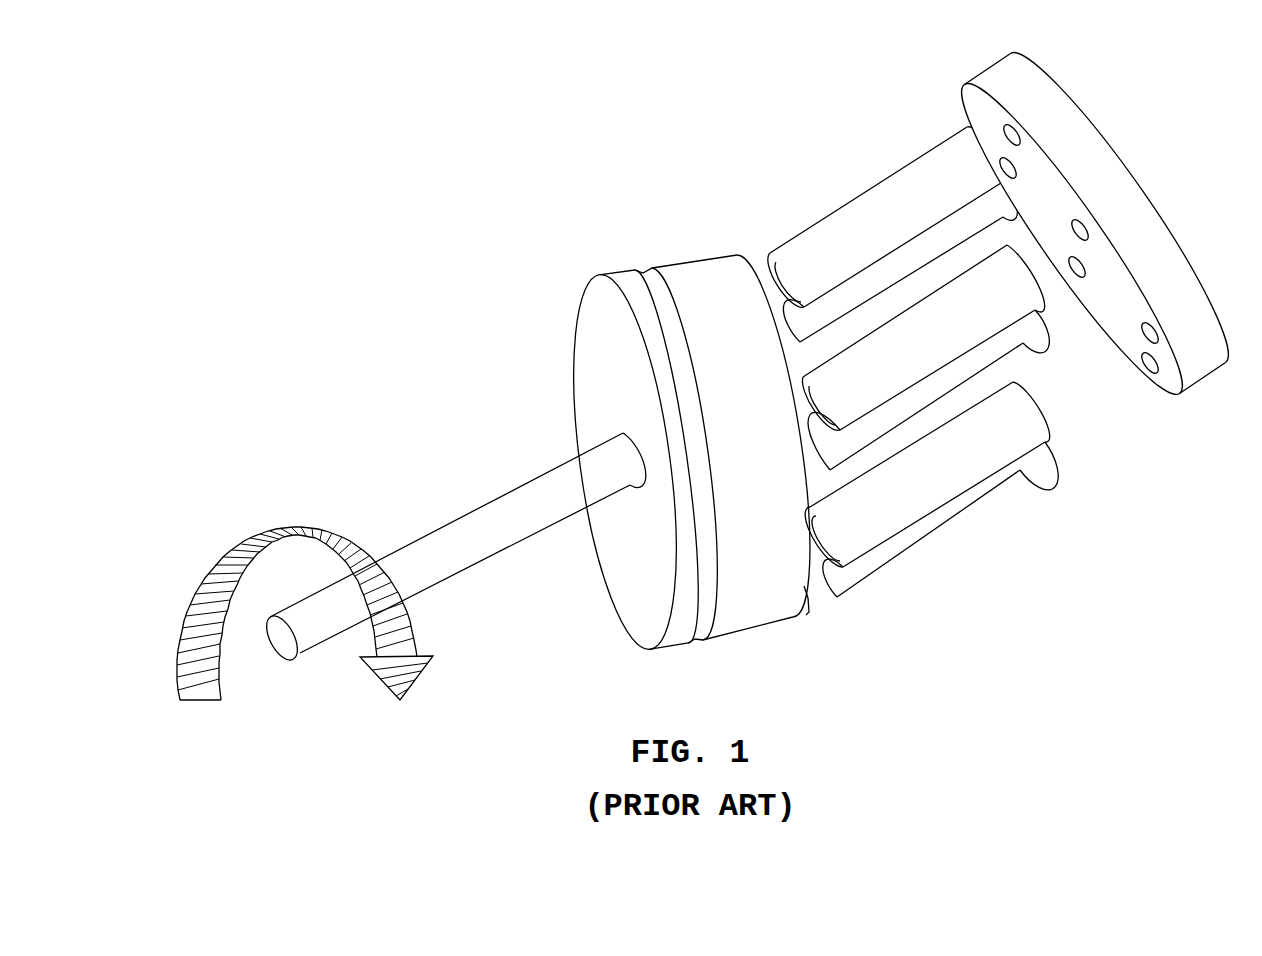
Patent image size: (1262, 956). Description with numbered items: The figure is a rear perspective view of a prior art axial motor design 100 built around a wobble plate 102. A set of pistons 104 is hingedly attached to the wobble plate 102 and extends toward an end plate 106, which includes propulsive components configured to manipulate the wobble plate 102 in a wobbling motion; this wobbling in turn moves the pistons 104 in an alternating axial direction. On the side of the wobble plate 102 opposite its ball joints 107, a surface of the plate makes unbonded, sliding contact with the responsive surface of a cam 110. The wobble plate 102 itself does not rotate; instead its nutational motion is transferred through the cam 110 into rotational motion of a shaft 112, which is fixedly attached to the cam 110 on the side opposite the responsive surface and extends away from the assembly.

The axial motor design 100 is at (305, 103).
The wobble plate 102 is at (697, 252).
The pistons 104 is at (1036, 444).
The end plate 106 is at (1069, 113).
The ball joints 107 is at (812, 606).
The cam 110 is at (597, 297).
The shaft 112 is at (505, 497).